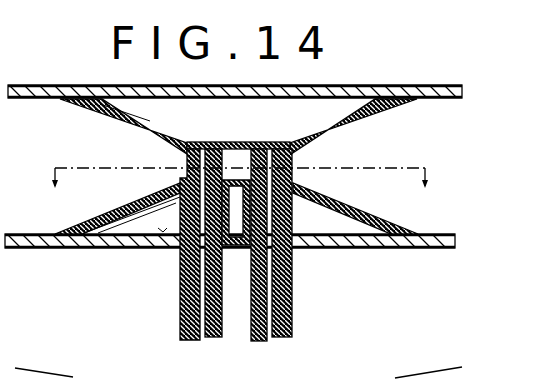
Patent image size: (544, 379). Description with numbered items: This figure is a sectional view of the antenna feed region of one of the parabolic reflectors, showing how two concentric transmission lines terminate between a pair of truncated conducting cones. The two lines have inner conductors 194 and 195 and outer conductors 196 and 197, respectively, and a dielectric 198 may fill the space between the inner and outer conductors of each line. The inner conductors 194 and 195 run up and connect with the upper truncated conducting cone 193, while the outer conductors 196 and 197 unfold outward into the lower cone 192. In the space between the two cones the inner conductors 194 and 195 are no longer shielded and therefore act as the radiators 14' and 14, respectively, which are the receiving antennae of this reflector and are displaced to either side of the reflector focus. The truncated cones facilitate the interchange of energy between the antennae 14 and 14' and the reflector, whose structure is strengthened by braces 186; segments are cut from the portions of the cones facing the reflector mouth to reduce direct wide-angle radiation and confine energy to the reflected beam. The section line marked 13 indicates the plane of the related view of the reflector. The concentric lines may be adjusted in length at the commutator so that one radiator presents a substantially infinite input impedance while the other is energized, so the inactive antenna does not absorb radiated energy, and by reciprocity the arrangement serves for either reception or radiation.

The receiving antenna 13 is at (242, 187).
The receiving antenna 14 is at (310, 157).
The receiving antenna 14' is at (167, 156).
The brace 186 is at (47, 84).
The lower cone 192 is at (344, 204).
The upper truncated conducting cone 193 is at (132, 127).
The inner conductor 194 is at (202, 345).
The inner conductor 195 is at (277, 340).
The outer conductor 196 is at (180, 258).
The outer conductor 197 is at (294, 255).
The dielectric 198 is at (213, 336).